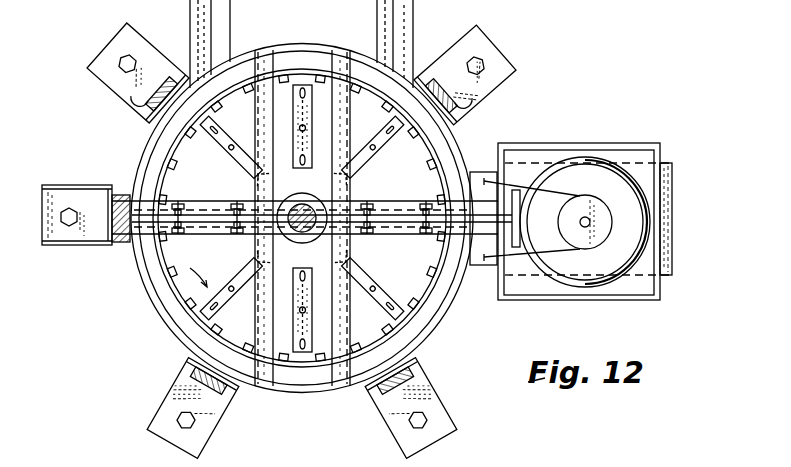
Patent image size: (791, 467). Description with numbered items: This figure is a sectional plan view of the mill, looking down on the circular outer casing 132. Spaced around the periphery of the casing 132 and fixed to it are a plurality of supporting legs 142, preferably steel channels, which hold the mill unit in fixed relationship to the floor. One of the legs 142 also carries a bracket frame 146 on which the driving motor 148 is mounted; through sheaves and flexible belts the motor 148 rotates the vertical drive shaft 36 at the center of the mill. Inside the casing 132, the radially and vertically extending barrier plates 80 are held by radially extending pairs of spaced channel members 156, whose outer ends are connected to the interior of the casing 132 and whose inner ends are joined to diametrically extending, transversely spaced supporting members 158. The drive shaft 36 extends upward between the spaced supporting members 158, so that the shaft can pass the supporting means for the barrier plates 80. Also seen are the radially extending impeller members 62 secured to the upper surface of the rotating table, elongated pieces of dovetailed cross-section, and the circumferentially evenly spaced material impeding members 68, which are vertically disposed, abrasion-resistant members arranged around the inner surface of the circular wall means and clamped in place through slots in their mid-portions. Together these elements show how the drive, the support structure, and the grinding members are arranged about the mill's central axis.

The drive shaft 36 is at (295, 204).
The impeller members 62 is at (371, 293).
The material impeding members 68 is at (222, 100).
The barrier plates 80 is at (215, 218).
The outer casing 132 is at (158, 312).
The supporting legs 142 is at (132, 107).
The bracket frame 146 is at (625, 292).
The driving motor 148 is at (628, 221).
The channel members 156 is at (202, 204).
The supporting members 158 is at (341, 60).